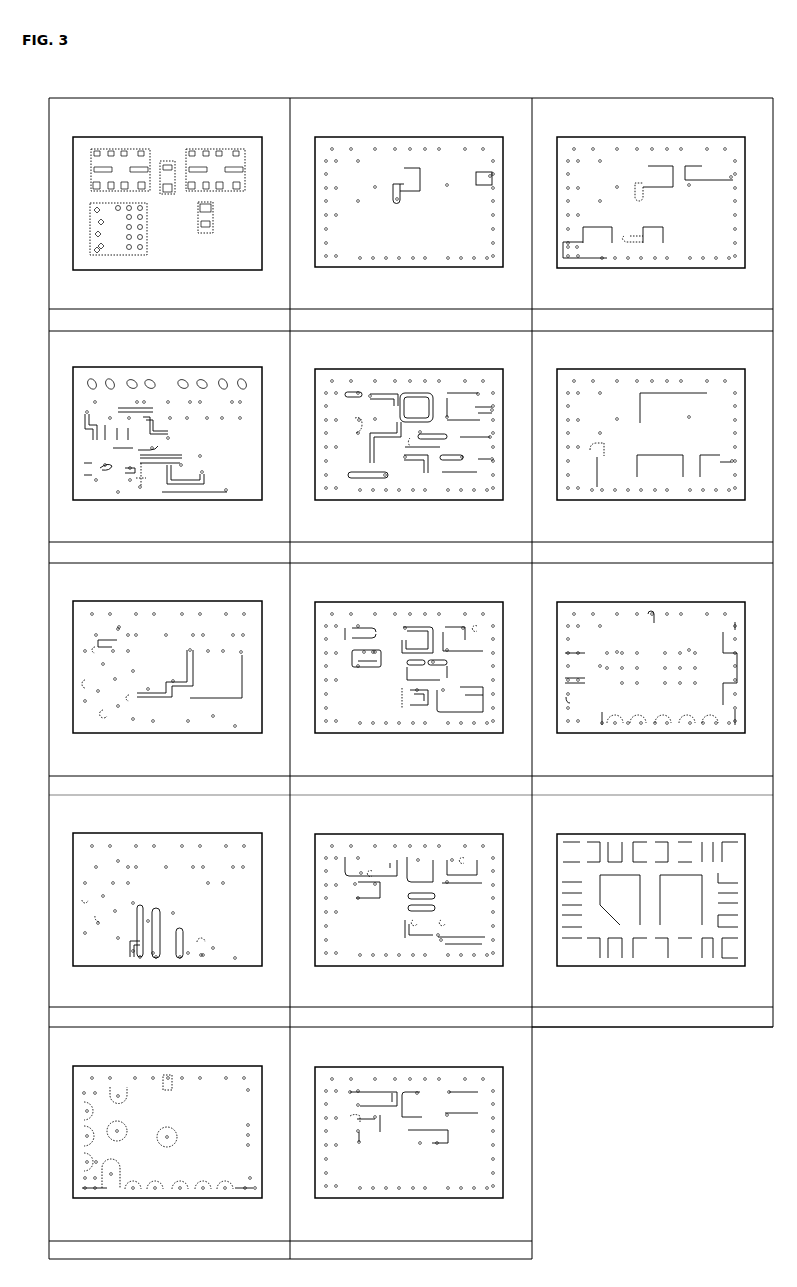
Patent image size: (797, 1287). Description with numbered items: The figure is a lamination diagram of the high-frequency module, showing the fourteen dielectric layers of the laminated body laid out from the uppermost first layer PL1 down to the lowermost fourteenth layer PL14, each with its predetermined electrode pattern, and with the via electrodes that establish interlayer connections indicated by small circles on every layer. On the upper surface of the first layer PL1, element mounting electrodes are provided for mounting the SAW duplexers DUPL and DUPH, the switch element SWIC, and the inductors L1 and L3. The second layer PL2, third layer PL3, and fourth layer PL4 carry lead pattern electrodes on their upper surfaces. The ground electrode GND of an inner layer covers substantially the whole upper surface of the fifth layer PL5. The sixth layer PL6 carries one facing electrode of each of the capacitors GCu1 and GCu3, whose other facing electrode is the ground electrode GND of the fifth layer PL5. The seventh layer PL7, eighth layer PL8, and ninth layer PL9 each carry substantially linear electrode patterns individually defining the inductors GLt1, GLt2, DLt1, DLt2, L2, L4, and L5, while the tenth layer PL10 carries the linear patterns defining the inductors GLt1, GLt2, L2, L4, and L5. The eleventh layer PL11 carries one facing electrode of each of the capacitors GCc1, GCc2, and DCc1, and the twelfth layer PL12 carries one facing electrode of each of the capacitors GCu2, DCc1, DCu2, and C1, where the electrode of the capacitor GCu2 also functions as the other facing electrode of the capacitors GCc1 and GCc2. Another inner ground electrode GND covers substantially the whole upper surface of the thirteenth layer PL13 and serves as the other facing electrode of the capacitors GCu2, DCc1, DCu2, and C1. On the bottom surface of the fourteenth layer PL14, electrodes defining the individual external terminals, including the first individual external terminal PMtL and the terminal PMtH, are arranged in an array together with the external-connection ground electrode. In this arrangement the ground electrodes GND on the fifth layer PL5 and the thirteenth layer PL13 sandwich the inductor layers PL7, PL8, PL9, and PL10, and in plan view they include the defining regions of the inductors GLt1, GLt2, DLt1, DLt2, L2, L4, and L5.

The first layer PL1 is at (167, 233).
The second layer PL2 is at (167, 465).
The third layer PL3 is at (167, 698).
The fourth layer PL4 is at (167, 930).
The fifth layer PL5 is at (167, 1163).
The sixth layer PL6 is at (409, 233).
The seventh layer PL7 is at (409, 466).
The eighth layer PL8 is at (409, 698).
The ninth layer PL9 is at (409, 930).
The tenth layer PL10 is at (409, 1163).
The eleventh layer PL11 is at (651, 233).
The twelfth layer PL12 is at (651, 466).
The thirteenth layer PL13 is at (651, 698).
The fourteenth layer PL14 is at (651, 930).
The SAW duplexer DUPL is at (120, 146).
The SAW duplexer DUPH is at (212, 146).
The inductor L1 is at (167, 159).
The inductor L2 is at (351, 434).
The inductor L3 is at (203, 237).
The inductor L4 is at (451, 438).
The inductor L5 is at (342, 400).
The switch element SWIC is at (114, 259).
The capacitor GCu1 is at (406, 166).
The capacitor GCu2 is at (657, 394).
The capacitor GCu3 is at (482, 170).
The capacitor GCc1 is at (660, 164).
The capacitor GCc2 is at (695, 164).
The ground electrode GND is at (587, 260).
The capacitor DCc1 is at (657, 246).
The capacitor DCu2 is at (715, 478).
The capacitor C1 is at (598, 476).
The inductor GLt1 is at (418, 391).
The inductor GLt2 is at (453, 391).
The inductor DLt1 is at (414, 475).
The inductor DLt2 is at (455, 478).
The first individual external terminal PMtL is at (728, 868).
The individual external terminal PMtH is at (723, 932).